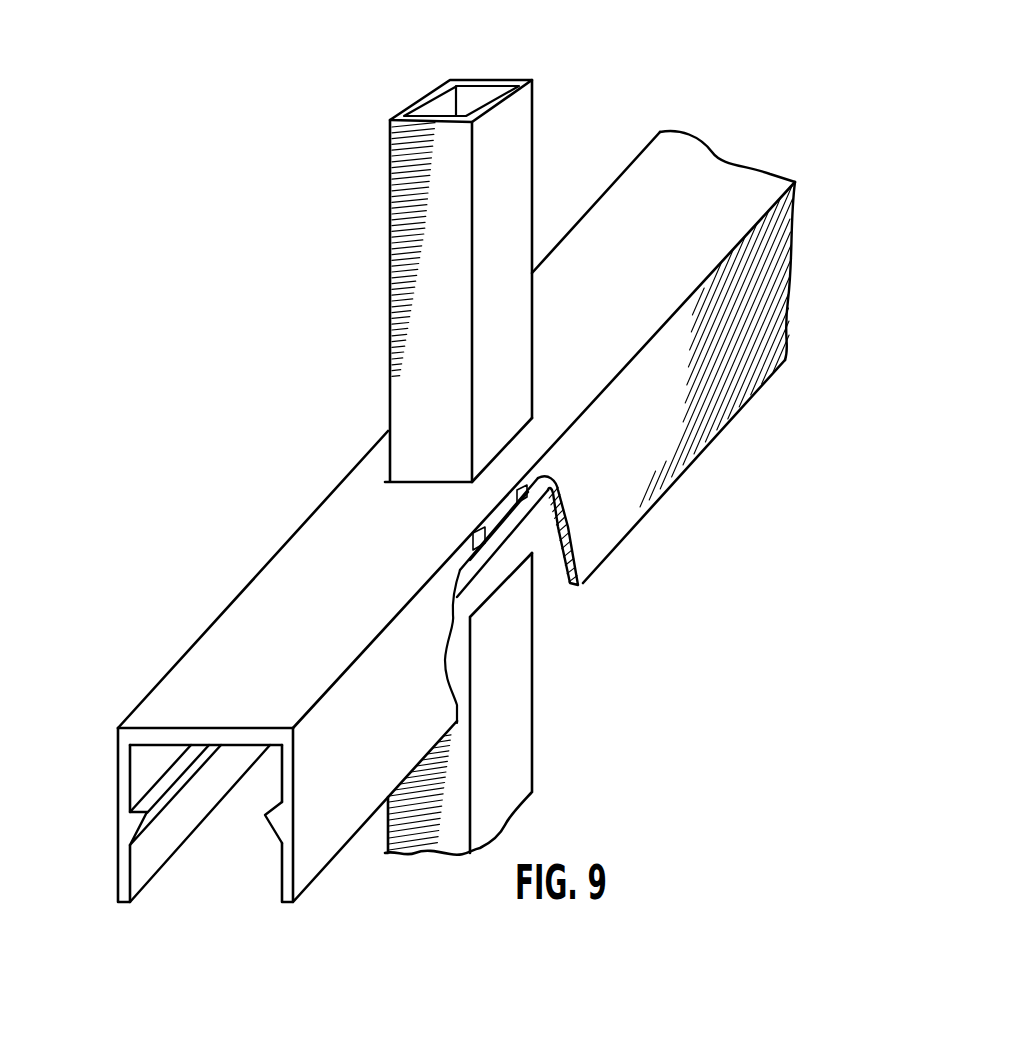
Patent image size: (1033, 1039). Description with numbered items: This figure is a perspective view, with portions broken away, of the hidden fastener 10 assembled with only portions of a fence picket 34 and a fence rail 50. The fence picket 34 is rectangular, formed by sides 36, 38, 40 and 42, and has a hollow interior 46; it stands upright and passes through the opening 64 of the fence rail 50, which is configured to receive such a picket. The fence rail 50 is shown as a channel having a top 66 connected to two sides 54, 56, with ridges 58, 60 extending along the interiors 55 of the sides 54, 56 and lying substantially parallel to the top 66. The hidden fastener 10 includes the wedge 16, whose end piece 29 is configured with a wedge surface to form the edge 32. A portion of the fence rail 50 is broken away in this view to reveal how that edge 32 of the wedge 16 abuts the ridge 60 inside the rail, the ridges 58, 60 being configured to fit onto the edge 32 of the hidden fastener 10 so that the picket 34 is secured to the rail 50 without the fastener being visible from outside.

The hidden fastener 10 is at (511, 615).
The wedge 16 is at (527, 583).
The end piece 29 is at (550, 483).
The edge 32 is at (550, 530).
The fence picket 34 is at (362, 196).
The side 36 is at (498, 163).
The side 38 is at (493, 92).
The side 40 is at (437, 105).
The side 42 is at (417, 311).
The hollow interior 46 is at (464, 107).
The fence rail 50 is at (125, 684).
The side 54 is at (118, 853).
The interior 55 is at (167, 850).
The side 56 is at (318, 852).
The ridge 58 is at (138, 820).
The ridge 60 is at (277, 820).
The opening 64 is at (533, 417).
The top 66 is at (195, 705).